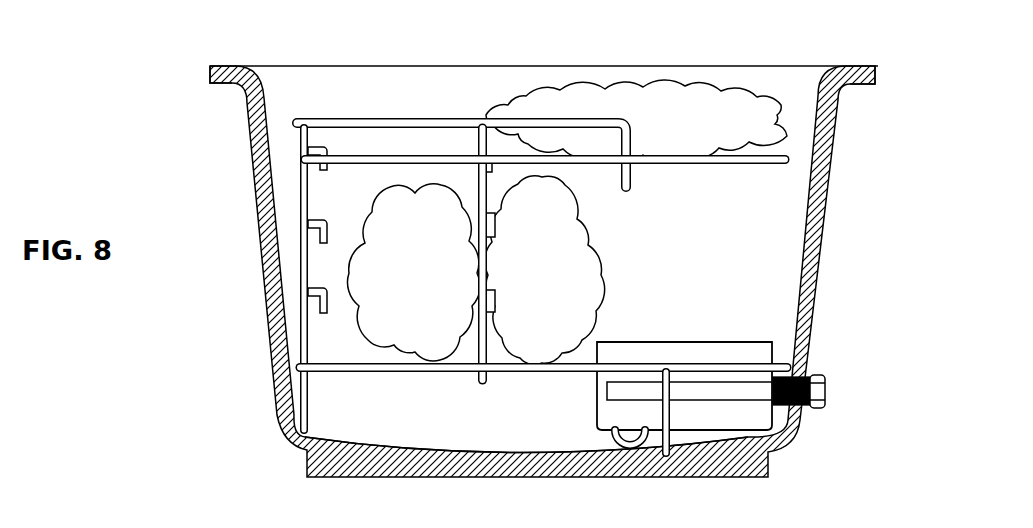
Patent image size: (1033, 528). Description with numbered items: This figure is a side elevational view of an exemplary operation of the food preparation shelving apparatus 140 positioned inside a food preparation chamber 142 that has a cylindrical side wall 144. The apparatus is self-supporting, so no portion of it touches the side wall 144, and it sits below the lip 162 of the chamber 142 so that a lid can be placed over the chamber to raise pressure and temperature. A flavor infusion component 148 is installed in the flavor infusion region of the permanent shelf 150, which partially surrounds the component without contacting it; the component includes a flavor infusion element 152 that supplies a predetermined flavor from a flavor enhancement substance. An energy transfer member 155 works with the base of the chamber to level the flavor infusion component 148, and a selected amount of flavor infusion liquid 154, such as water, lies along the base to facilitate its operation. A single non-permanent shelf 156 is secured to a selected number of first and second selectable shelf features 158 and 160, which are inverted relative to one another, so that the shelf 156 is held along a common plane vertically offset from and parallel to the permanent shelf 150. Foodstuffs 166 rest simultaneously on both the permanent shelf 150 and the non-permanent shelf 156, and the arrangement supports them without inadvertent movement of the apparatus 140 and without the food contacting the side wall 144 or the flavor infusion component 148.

The food preparation shelving apparatus 140 is at (461, 99).
The food preparation chamber 142 is at (463, 36).
The cylindrical side wall 144 is at (258, 222).
The flavor infusion component 148 is at (762, 332).
The permanent shelf 150 is at (314, 370).
The flavor infusion element 152 is at (612, 391).
The flavor infusion liquid 154 is at (463, 455).
The energy transfer member 155 is at (614, 442).
The non-permanent shelf 156 is at (674, 166).
The first selectable shelf feature 158 is at (494, 292).
The second selectable shelf feature 160 is at (340, 211).
The lip 162 is at (233, 67).
The foodstuffs 166 is at (668, 100).